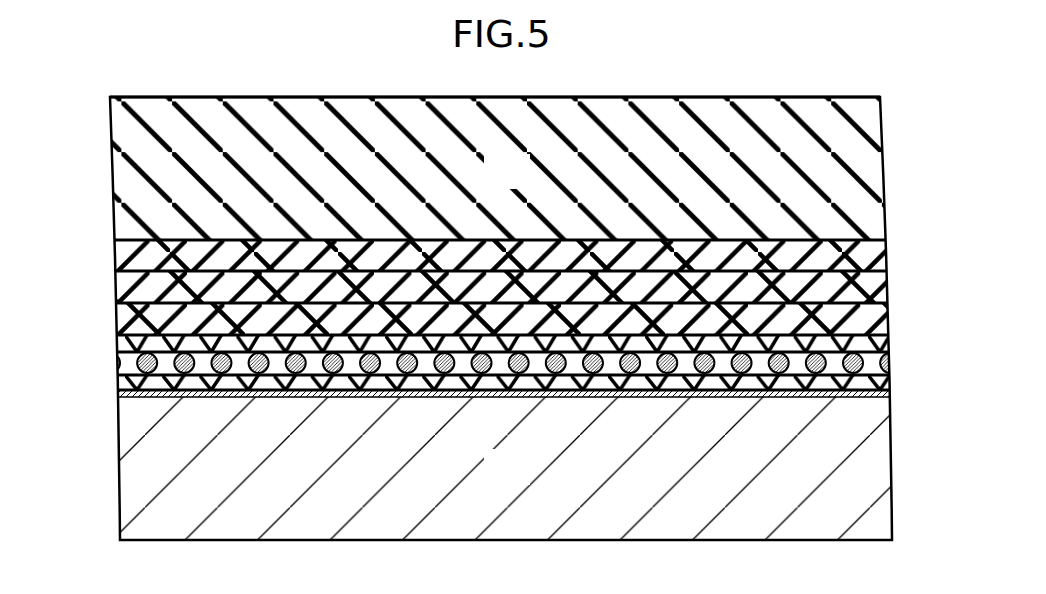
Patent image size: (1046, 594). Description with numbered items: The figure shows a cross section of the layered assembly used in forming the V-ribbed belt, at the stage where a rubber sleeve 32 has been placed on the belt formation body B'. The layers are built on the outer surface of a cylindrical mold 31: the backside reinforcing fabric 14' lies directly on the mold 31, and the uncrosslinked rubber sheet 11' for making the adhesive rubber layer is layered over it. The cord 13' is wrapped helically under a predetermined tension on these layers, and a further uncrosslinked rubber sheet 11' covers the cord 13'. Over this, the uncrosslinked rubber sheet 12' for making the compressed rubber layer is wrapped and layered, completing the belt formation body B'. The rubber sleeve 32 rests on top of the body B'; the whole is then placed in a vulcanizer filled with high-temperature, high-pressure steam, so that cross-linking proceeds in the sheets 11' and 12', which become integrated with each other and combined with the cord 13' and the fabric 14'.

The rubber sleeve 32 is at (524, 185).
The cylindrical mold 31 is at (524, 480).
The uncrosslinked rubber sheet 12' is at (472, 287).
The uncrosslinked rubber sheet 11' is at (472, 362).
The cord 13' is at (521, 361).
The backside reinforcing fabric 14' is at (521, 413).
The belt formation body B' is at (898, 211).